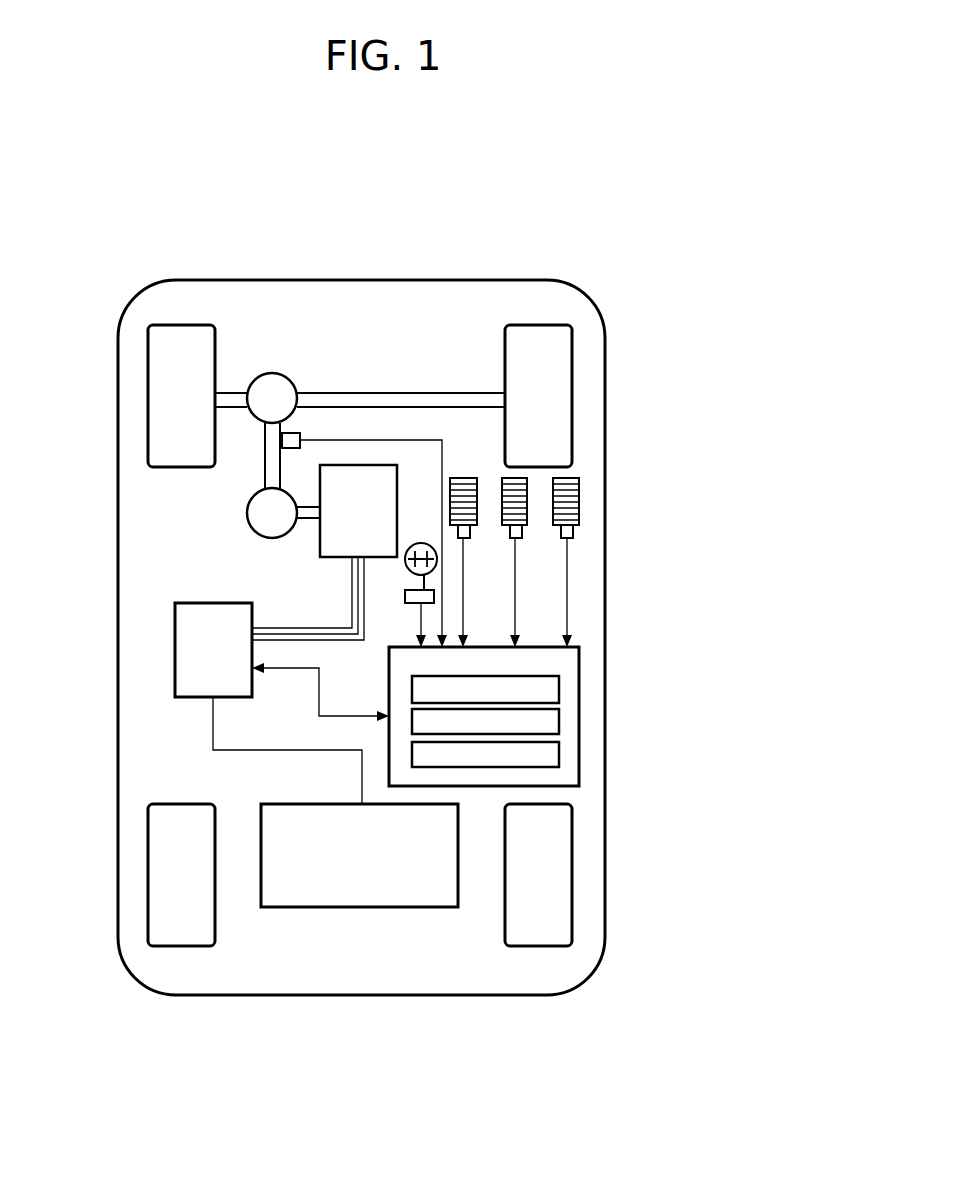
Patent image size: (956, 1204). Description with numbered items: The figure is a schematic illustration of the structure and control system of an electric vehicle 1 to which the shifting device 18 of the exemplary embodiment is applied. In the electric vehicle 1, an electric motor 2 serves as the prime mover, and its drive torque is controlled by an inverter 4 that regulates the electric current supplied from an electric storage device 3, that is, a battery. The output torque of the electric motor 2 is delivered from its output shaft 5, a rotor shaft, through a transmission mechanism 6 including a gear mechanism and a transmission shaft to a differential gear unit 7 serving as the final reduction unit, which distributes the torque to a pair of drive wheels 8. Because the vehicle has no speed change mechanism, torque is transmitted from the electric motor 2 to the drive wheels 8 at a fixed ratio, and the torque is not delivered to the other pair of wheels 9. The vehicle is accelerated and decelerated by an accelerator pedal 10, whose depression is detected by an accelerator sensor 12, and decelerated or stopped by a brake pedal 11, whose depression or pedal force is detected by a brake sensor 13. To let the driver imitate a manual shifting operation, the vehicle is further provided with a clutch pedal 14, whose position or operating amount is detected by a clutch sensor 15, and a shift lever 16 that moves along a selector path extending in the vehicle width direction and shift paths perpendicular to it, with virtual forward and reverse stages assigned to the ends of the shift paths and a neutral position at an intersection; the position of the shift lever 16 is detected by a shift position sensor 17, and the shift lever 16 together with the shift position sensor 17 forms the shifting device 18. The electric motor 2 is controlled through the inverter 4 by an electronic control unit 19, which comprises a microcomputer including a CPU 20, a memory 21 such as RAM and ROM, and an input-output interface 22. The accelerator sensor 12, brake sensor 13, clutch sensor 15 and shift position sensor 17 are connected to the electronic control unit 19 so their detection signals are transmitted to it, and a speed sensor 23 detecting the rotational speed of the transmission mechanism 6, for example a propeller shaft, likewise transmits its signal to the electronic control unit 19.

The electric vehicle 1 is at (582, 274).
The electric motor 2 is at (318, 556).
The electric storage device 3 is at (361, 907).
The inverter 4 is at (175, 650).
The output shaft 5 is at (302, 522).
The transmission mechanism 6 is at (258, 483).
The differential gear unit 7 is at (272, 372).
The drive wheels 8 is at (148, 383).
The wheels 9 is at (148, 877).
The accelerator pedal 10 is at (580, 494).
The brake pedal 11 is at (519, 478).
The accelerator sensor 12 is at (574, 532).
The brake sensor 13 is at (520, 538).
The clutch pedal 14 is at (467, 478).
The clutch sensor 15 is at (470, 538).
The shift lever 16 is at (503, 467).
The shift position sensor 17 is at (434, 597).
The shifting device 18 is at (421, 535).
The electronic control unit 19 is at (530, 714).
The CPU 20 is at (559, 753).
The memory 21 is at (559, 719).
The input-output interface 22 is at (559, 690).
The speed sensor 23 is at (297, 433).